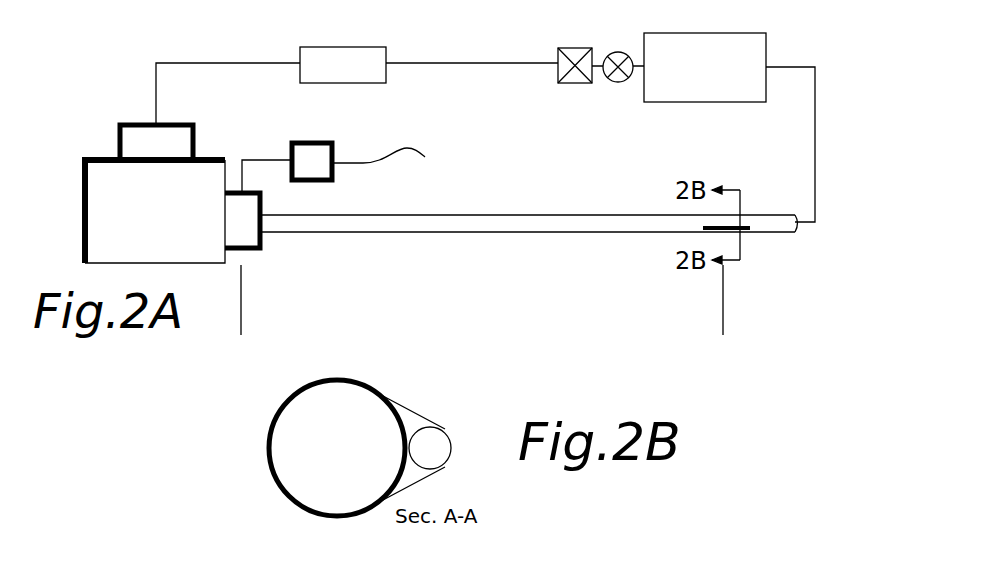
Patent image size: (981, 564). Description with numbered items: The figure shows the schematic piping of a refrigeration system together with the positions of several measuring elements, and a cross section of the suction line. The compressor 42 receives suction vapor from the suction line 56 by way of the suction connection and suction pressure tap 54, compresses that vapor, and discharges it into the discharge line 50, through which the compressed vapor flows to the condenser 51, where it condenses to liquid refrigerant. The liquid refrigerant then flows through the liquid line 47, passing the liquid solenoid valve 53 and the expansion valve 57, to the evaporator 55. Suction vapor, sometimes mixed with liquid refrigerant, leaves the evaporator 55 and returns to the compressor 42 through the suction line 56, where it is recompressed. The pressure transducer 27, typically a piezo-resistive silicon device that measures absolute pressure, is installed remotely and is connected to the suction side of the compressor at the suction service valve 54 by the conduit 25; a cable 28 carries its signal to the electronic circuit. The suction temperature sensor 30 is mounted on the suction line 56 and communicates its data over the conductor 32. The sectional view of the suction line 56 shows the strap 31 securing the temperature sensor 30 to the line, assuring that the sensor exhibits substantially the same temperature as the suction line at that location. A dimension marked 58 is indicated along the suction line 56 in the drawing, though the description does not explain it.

In FIG. 2A, the compressor 42 is at (155, 194).
In FIG. 2A, the discharge line 50 is at (156, 102).
In FIG. 2A, the condenser 51 is at (386, 73).
In FIG. 2A, the liquid line 47 is at (460, 63).
In FIG. 2A, the liquid solenoid valve 53 is at (558, 78).
In FIG. 2A, the expansion valve 57 is at (618, 82).
In FIG. 2A, the evaporator 55 is at (690, 102).
In FIG. 2A, the suction connection and suction pressure tap 54 is at (260, 248).
In FIG. 2A, the conduit 25 is at (267, 160).
In FIG. 2A, the pressure transducer 27 is at (332, 143).
In FIG. 2A, the cable 28 is at (363, 163).
In FIG. 2A, the suction line 56 is at (468, 215).
In FIG. 2B, the suction line 56 is at (267, 435).
In FIG. 2A, the suction temperature sensor 30 is at (723, 230).
In FIG. 2B, the suction temperature sensor 30 is at (452, 440).
In FIG. 2A, the conductor 32 is at (747, 226).
In FIG. 2A, the length of tube 58 is at (723, 302).
In FIG. 2B, the strap 31 is at (413, 407).